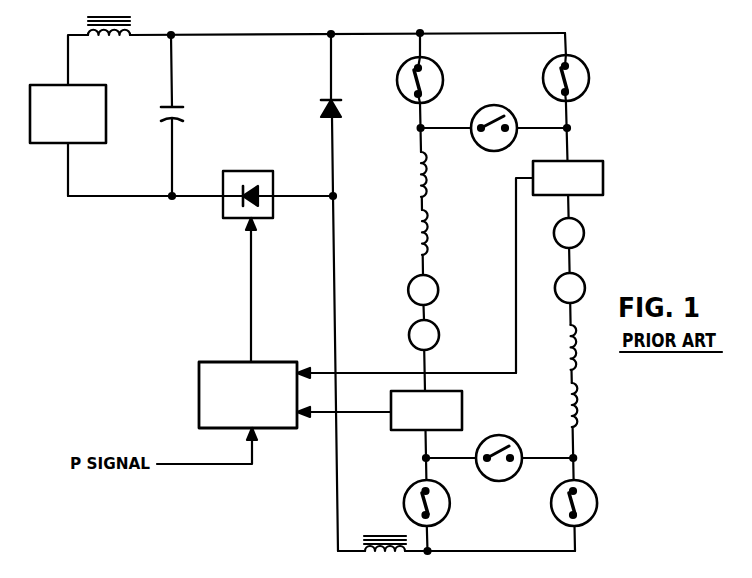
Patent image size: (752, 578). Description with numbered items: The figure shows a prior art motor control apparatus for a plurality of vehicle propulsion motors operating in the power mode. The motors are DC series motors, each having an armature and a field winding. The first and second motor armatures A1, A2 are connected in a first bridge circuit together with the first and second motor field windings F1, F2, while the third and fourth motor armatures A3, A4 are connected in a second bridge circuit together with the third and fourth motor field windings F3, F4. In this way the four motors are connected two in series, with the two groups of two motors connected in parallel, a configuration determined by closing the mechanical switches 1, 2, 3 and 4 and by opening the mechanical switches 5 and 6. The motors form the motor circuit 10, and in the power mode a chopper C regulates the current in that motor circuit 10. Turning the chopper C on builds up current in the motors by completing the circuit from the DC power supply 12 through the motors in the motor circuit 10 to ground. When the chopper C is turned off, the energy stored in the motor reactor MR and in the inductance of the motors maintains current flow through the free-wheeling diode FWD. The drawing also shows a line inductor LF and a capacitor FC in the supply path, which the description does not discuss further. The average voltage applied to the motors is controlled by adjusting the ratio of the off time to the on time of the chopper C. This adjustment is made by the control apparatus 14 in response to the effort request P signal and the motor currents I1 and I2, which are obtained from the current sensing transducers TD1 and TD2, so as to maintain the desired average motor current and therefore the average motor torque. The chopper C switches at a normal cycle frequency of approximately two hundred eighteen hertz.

The DC power supply 12 is at (46, 85).
The control apparatus 14 is at (222, 361).
The motor circuit 10 is at (506, 232).
The mechanical switch 1 is at (397, 78).
The mechanical switch 2 is at (544, 79).
The mechanical switch 3 is at (412, 488).
The mechanical switch 4 is at (552, 500).
The mechanical switch 5 is at (480, 110).
The mechanical switch 6 is at (499, 435).
The line filter inductor LF is at (85, 28).
The filter capacitor FC is at (190, 113).
The free-wheeling diode FWD is at (321, 110).
The chopper C is at (245, 172).
The first motor field winding F1 is at (565, 344).
The second motor field winding F2 is at (572, 402).
The third motor field winding F3 is at (419, 170).
The fourth motor field winding F4 is at (420, 228).
The first motor armature A1 is at (556, 284).
The second motor armature A2 is at (556, 233).
The third motor armature A3 is at (437, 294).
The fourth motor armature A4 is at (438, 344).
The current sensing transducer TD1 is at (568, 178).
The current sensing transducer TD2 is at (426, 410).
The motor reactor MR is at (361, 540).
The motor current I1 is at (383, 373).
The motor current I2 is at (370, 414).